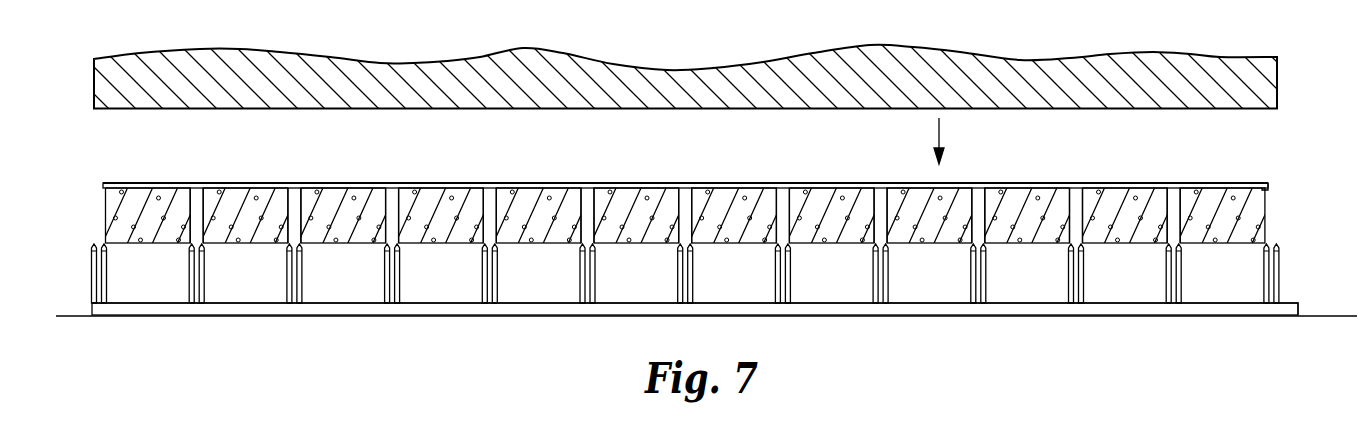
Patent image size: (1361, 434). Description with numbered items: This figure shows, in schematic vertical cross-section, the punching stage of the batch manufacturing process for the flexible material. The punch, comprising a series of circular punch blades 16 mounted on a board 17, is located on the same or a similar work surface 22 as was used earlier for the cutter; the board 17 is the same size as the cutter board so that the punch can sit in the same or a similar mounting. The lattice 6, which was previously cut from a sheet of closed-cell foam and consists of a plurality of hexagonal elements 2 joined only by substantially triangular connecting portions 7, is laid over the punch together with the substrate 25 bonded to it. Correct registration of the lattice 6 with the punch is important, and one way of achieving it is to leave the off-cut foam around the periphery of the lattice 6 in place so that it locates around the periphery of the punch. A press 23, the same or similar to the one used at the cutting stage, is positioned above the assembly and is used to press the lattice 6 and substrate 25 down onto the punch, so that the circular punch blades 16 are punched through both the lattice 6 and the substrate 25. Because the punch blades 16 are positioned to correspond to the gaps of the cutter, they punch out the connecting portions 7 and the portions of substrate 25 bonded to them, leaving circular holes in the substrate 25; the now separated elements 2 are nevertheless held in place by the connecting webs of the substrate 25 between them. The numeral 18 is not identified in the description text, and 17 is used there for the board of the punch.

The hexagonal element 2 is at (432, 220).
The lattice 6 is at (1213, 223).
The connecting portion 7 is at (487, 212).
The punch blade 16 is at (1085, 270).
The board 17 is at (1290, 305).
The base plate 18 is at (1213, 322).
The work surface 22 is at (73, 316).
The press 23 is at (1248, 78).
The substrate 25 is at (1203, 183).